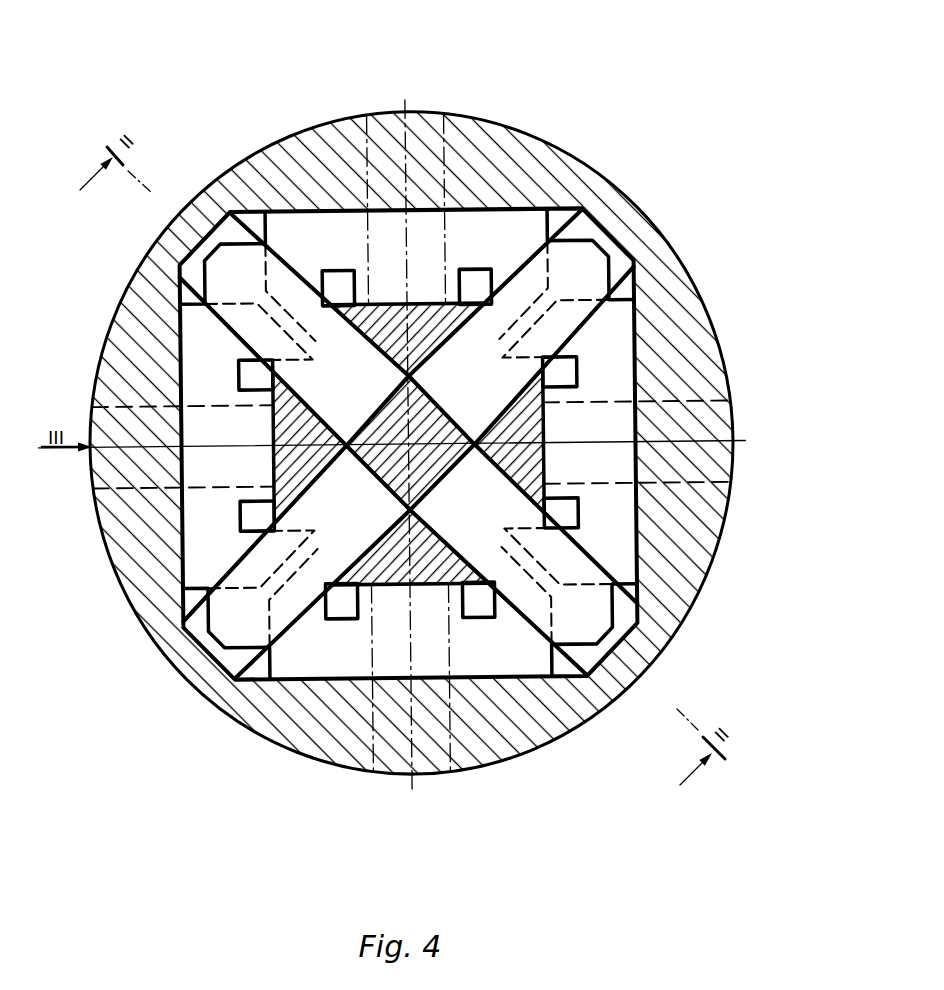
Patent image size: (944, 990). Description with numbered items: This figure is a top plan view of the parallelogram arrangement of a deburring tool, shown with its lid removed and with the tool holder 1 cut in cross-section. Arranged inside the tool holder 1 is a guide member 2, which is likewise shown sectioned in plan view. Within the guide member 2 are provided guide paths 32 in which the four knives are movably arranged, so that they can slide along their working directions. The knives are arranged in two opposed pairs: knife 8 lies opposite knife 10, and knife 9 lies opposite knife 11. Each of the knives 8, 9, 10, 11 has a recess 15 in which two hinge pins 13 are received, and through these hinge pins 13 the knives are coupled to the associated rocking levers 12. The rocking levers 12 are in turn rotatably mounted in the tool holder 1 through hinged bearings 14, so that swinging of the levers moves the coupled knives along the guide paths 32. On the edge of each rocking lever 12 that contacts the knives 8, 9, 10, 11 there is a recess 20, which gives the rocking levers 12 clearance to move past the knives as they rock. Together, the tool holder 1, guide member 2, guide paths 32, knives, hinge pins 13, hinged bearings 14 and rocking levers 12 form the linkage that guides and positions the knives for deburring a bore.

The tool holder 1 is at (544, 702).
The guide member 2 is at (420, 468).
The knife 8 is at (237, 658).
The knife 9 is at (592, 656).
The knife 10 is at (567, 268).
The knife 11 is at (200, 275).
The rocking lever 12 is at (520, 230).
The hinge pin 13 is at (237, 658).
The hinged bearing 14 is at (415, 148).
The recess 15 is at (592, 656).
The recess 20 is at (580, 498).
The guide path 32 is at (373, 412).